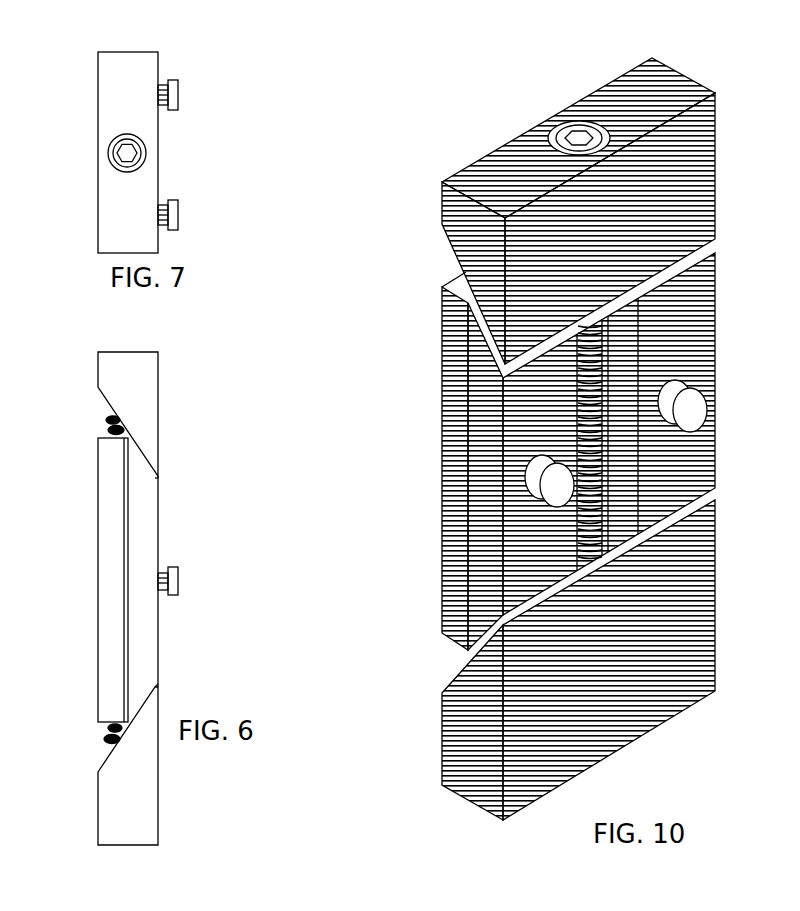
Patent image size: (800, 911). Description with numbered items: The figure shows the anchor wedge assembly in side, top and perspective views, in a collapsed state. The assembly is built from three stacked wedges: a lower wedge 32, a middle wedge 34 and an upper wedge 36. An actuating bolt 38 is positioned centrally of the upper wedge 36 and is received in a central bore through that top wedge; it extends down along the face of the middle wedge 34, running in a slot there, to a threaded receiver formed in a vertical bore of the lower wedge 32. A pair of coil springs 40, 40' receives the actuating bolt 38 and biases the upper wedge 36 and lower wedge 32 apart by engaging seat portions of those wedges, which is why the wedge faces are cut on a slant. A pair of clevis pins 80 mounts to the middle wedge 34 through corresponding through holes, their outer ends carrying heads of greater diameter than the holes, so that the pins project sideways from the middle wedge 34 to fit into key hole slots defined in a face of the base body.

In FIG. 6, the lower wedge 32 is at (145, 792).
In FIG. 10, the lower wedge 32 is at (482, 735).
In FIG. 6, the middle wedge 34 is at (110, 593).
In FIG. 10, the middle wedge 34 is at (460, 438).
In FIG. 7, the upper wedge 36 is at (125, 70).
In FIG. 6, the upper wedge 36 is at (158, 408).
In FIG. 10, the upper wedge 36 is at (463, 212).
In FIG. 7, the actuating bolt 38 is at (127, 158).
In FIG. 10, the actuating bolt 38 is at (580, 137).
In FIG. 6, the coil spring 40 is at (83, 414).
In FIG. 10, the coil spring 40 is at (673, 344).
In FIG. 6, the coil spring 40' is at (92, 736).
In FIG. 10, the coil spring 40' is at (679, 493).
In FIG. 7, the clevis pin 80 is at (178, 97).
In FIG. 6, the clevis pin 80 is at (178, 578).
In FIG. 10, the clevis pin 80 is at (553, 484).